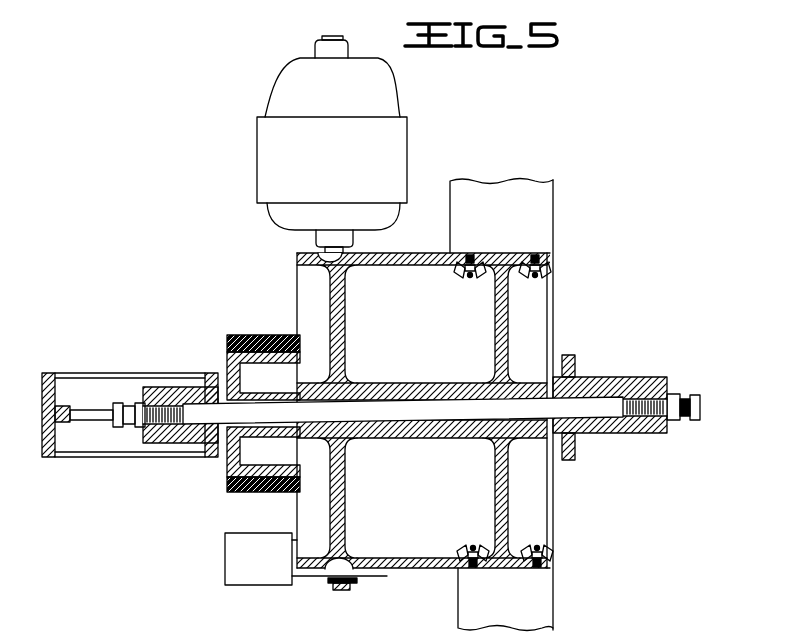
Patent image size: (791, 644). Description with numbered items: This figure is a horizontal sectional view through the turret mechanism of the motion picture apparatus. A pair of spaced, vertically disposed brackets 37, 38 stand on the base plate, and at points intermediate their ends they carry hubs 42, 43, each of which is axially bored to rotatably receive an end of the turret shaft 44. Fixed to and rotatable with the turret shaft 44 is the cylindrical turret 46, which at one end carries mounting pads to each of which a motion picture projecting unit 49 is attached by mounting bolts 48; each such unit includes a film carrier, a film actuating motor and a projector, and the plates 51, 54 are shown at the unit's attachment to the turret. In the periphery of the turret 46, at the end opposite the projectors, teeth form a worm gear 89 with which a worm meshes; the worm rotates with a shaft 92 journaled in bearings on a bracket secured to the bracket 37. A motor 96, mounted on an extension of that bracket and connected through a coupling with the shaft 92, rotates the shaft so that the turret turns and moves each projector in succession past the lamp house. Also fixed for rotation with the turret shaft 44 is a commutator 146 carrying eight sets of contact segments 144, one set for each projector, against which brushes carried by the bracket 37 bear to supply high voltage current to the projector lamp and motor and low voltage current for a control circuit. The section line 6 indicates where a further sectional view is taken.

The motor 96 is at (334, 165).
The upper plate 51 is at (493, 192).
The lower plate 54 is at (532, 612).
The motion picture projecting unit 49 is at (556, 188).
The cylindrical turret 46 is at (390, 266).
The mounting bolts 48 is at (470, 278).
The turret shaft 44 is at (428, 415).
The hub 42 is at (168, 388).
The hub 43 is at (628, 386).
The bracket 37 is at (128, 453).
The bracket 38 is at (570, 459).
The commutator 146 is at (228, 465).
The contact segments 144 is at (245, 491).
The worm gear 89 is at (325, 582).
The shaft 92 is at (352, 587).
The section line 6- 6 is at (553, 358).